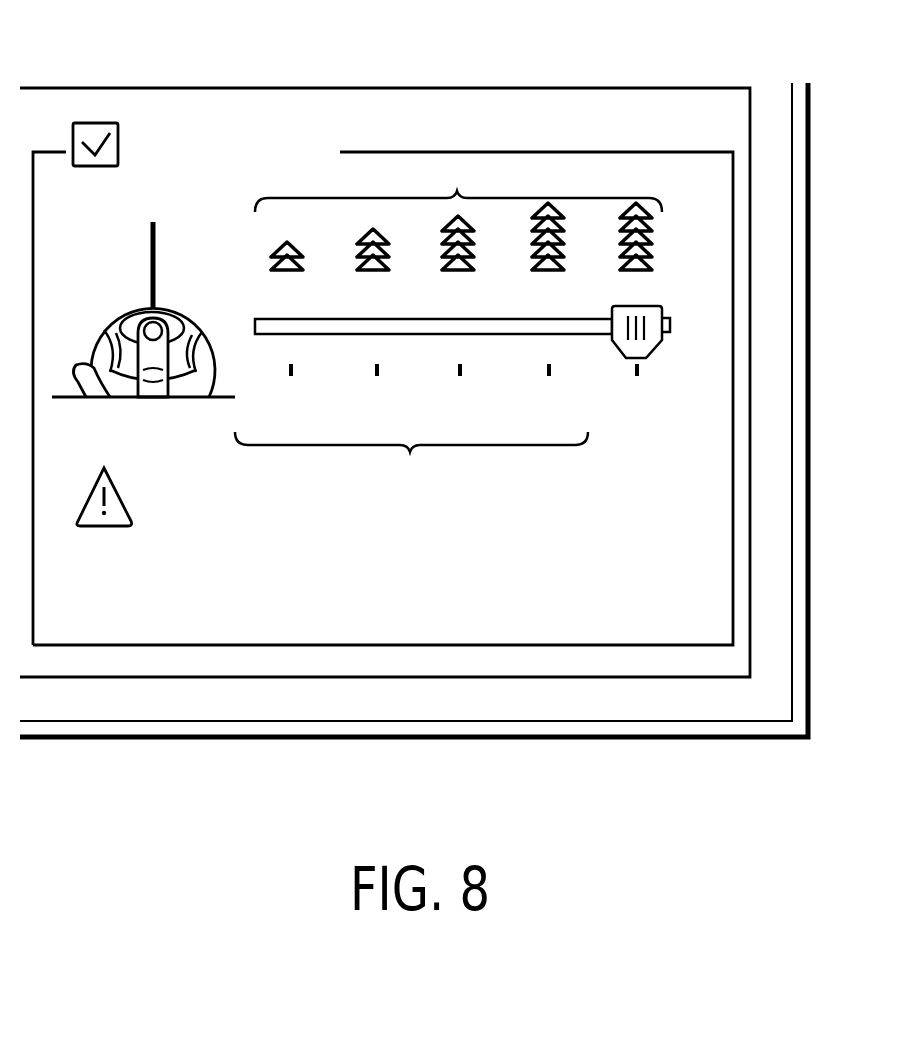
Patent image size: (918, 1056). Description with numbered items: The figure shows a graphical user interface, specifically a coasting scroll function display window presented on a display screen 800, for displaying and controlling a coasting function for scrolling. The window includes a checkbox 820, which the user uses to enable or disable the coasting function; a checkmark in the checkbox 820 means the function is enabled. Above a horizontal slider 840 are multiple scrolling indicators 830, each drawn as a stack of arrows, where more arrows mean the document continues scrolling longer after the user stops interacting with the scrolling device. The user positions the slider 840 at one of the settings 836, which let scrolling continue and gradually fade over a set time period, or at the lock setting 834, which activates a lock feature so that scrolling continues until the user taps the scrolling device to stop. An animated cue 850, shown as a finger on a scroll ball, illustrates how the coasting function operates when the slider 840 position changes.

The display screen 800 is at (410, 88).
The checkbox 820 is at (90, 122).
The scrolling indicators 830 is at (458, 214).
The lock setting 834 is at (643, 370).
The settings 836 is at (453, 425).
The slider 840 is at (661, 312).
The animated cue 850 is at (126, 266).